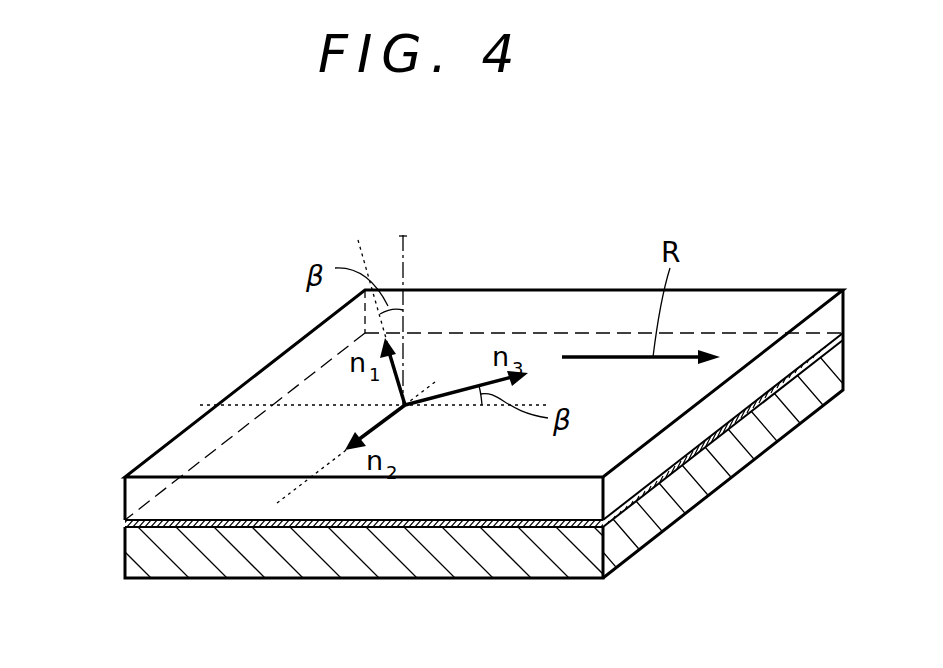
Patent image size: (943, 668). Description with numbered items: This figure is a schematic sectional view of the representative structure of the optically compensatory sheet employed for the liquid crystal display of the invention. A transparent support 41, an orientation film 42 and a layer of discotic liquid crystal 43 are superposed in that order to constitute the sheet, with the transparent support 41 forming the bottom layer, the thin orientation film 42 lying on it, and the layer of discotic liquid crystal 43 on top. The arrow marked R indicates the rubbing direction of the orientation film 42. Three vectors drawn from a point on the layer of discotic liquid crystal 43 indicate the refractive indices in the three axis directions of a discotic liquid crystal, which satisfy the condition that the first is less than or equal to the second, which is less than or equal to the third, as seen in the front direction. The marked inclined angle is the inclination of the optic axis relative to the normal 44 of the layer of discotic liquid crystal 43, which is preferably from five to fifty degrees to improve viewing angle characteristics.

The transparent support 41 is at (125, 548).
The orientation film 42 is at (125, 523).
The layer of discotic liquid crystal 43 is at (123, 493).
The normal of the layer of the discotic liquid crystal 44 is at (405, 240).